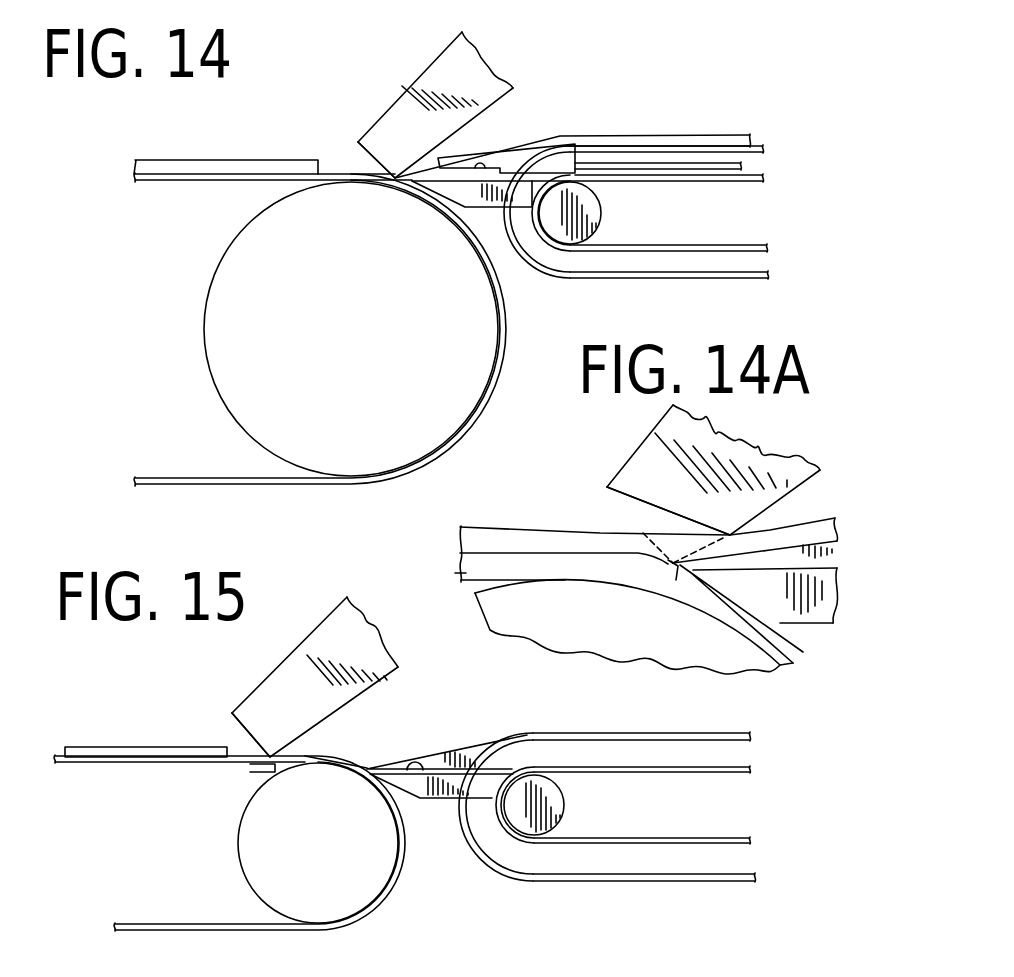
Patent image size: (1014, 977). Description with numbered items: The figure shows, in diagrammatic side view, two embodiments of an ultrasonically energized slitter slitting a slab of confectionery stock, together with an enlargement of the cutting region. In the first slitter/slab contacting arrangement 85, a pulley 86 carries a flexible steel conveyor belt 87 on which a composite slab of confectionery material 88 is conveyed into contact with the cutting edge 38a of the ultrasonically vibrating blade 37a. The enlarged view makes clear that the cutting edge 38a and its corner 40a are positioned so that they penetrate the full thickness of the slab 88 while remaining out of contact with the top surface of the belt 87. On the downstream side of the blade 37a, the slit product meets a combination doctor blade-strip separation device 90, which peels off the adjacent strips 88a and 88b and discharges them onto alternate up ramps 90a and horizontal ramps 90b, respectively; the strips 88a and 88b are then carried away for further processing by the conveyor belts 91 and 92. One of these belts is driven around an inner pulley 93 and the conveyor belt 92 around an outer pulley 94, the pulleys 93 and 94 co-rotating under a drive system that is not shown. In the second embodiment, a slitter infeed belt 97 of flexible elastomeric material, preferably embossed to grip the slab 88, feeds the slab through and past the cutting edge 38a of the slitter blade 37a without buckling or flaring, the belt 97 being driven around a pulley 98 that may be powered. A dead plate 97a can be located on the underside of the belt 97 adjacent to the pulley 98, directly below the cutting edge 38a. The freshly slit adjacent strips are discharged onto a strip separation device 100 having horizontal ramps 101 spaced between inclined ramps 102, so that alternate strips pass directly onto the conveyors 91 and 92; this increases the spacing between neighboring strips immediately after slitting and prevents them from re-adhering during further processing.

In FIG. 14, the ultrasonically vibrating blade 37a is at (442, 46).
In FIG. 14A, the ultrasonically vibrating blade 37a is at (650, 450).
In FIG. 15, the ultrasonically vibrating blade 37a is at (290, 660).
In FIG. 14, the cutting edge 38a is at (363, 152).
In FIG. 14A, the cutting edge 38a is at (622, 510).
In FIG. 15, the cutting edge 38a is at (235, 724).
In FIG. 14, the slitter/slab contacting arrangement 85 is at (663, 86).
In FIG. 14A, the slitter/slab contacting arrangement 85 is at (777, 434).
In FIG. 14, the pulley 86 is at (218, 330).
In FIG. 14A, the pulley 86 is at (507, 607).
In FIG. 14, the flexible steel conveyor belt 87 is at (192, 183).
In FIG. 14A, the flexible steel conveyor belt 87 is at (462, 574).
In FIG. 14, the composite slab of confectionery material 88 is at (175, 160).
In FIG. 15, the composite slab of confectionery material 88 is at (137, 746).
In FIG. 14, the strip 88a is at (705, 136).
In FIG. 14A, the strip 88a is at (803, 523).
In FIG. 14, the strip 88b is at (745, 167).
In FIG. 14, the combination doctor blade-strip separation device 90 is at (437, 189).
In FIG. 14A, the combination doctor blade-strip separation device 90 is at (849, 568).
In FIG. 14, the up ramp 90a is at (492, 156).
In FIG. 14, the horizontal ramp 90b is at (457, 210).
In FIG. 14, the conveyor belt 91 is at (757, 182).
In FIG. 15, the conveyor belt 91 is at (705, 837).
In FIG. 14, the conveyor belt 92 is at (760, 144).
In FIG. 15, the conveyor belt 92 is at (685, 882).
In FIG. 14, the inner pulley 93 is at (592, 212).
In FIG. 15, the inner pulley 93 is at (557, 806).
In FIG. 14, the outer pulley 94 is at (560, 263).
In FIG. 15, the outer pulley 94 is at (543, 860).
In FIG. 14A, the corner 40a is at (677, 566).
In FIG. 15, the slitter infeed belt 97 is at (92, 766).
In FIG. 15, the dead plate 97a is at (253, 770).
In FIG. 15, the pulley 98 is at (265, 868).
In FIG. 15, the strip separation device 100 is at (409, 805).
In FIG. 15, the horizontal ramps 101 is at (435, 752).
In FIG. 15, the inclined ramps 102 is at (418, 798).